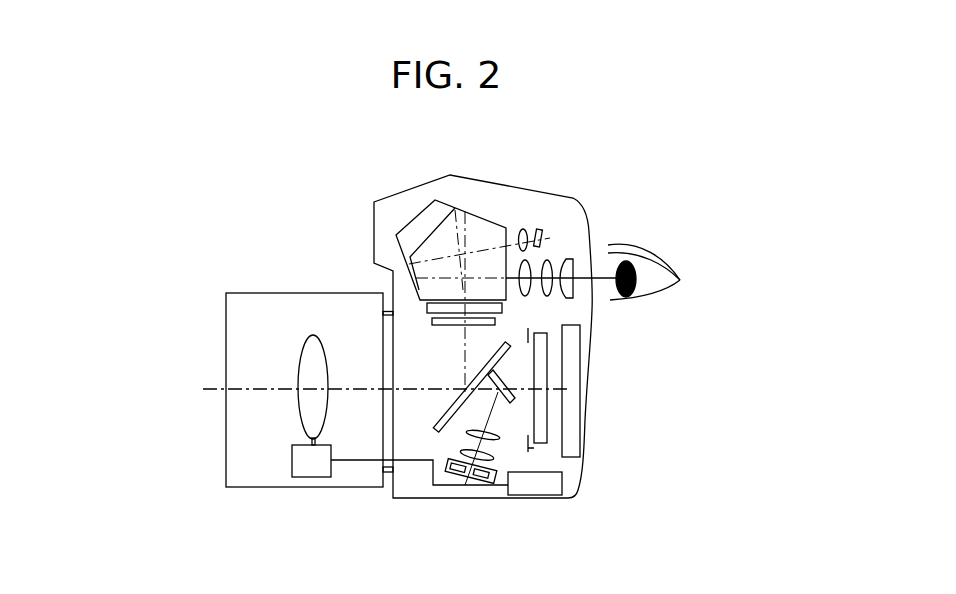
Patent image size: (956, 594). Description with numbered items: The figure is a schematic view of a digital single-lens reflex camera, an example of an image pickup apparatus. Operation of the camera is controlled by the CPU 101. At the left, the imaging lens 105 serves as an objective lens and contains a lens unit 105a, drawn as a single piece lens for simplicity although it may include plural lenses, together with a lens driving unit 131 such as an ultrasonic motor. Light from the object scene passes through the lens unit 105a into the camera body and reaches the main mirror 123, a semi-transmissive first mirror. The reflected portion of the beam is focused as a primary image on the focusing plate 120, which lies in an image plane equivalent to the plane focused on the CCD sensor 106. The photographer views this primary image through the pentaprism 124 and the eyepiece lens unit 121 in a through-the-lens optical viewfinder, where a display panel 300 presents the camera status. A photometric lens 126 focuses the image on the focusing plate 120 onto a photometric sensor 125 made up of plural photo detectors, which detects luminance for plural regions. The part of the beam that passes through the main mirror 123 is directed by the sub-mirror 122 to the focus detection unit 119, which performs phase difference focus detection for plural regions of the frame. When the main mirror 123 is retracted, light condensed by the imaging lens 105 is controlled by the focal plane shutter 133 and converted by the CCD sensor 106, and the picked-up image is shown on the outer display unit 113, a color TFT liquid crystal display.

The CPU 101 is at (535, 483).
The imaging lens 105 is at (250, 292).
The lens unit 105a is at (297, 367).
The CCD sensor 106 is at (540, 413).
The outer display unit 113 is at (572, 405).
The focus detection unit 119 is at (473, 482).
The focusing plate 120 is at (431, 320).
The eyepiece lens unit 121 is at (558, 260).
The sub-mirror 122 is at (508, 382).
The main mirror 123 is at (446, 432).
The pentaprism 124 is at (415, 218).
The photometric sensor 125 is at (535, 220).
The photometric lens 126 is at (518, 227).
The lens driving unit 131 is at (312, 467).
The focal plane shutter 133 is at (528, 448).
The display panel 300 is at (425, 307).